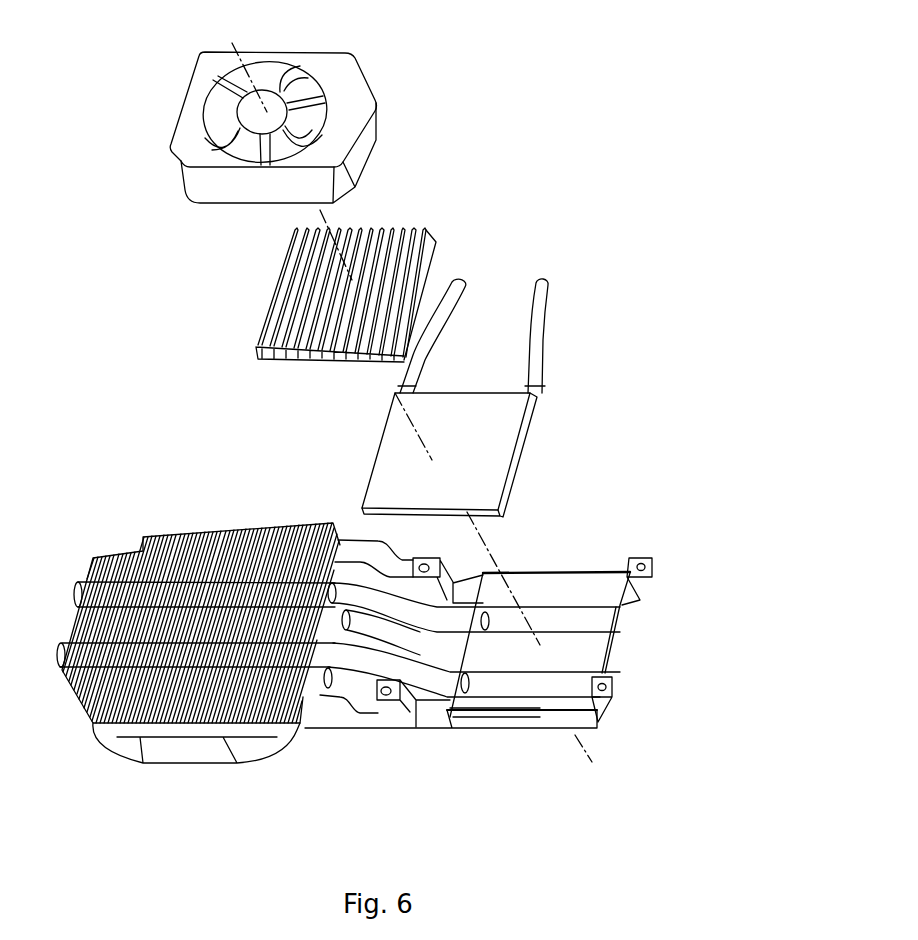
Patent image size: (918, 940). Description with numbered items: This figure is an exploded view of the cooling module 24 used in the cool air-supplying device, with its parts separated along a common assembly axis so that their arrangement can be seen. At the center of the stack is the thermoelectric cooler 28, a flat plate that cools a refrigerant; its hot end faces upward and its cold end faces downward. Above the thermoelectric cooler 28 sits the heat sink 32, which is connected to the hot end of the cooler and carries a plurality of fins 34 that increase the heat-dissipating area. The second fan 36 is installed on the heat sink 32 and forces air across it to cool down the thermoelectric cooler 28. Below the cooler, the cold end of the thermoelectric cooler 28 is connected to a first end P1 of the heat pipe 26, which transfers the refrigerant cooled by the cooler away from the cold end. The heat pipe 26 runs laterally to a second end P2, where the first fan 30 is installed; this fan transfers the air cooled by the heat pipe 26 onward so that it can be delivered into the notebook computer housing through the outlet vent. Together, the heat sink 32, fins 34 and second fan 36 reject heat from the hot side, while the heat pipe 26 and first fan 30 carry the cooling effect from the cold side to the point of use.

The cooling module 24 is at (557, 120).
The heat pipe 26 is at (577, 608).
The thermoelectric cooler 28 is at (527, 442).
The first fan 30 is at (263, 750).
The heat sink 32 is at (372, 272).
The fins 34 is at (418, 229).
The second fan 36 is at (380, 88).
The first end of the heat pipe P1 is at (622, 627).
The second end of the heat pipe P2 is at (84, 603).